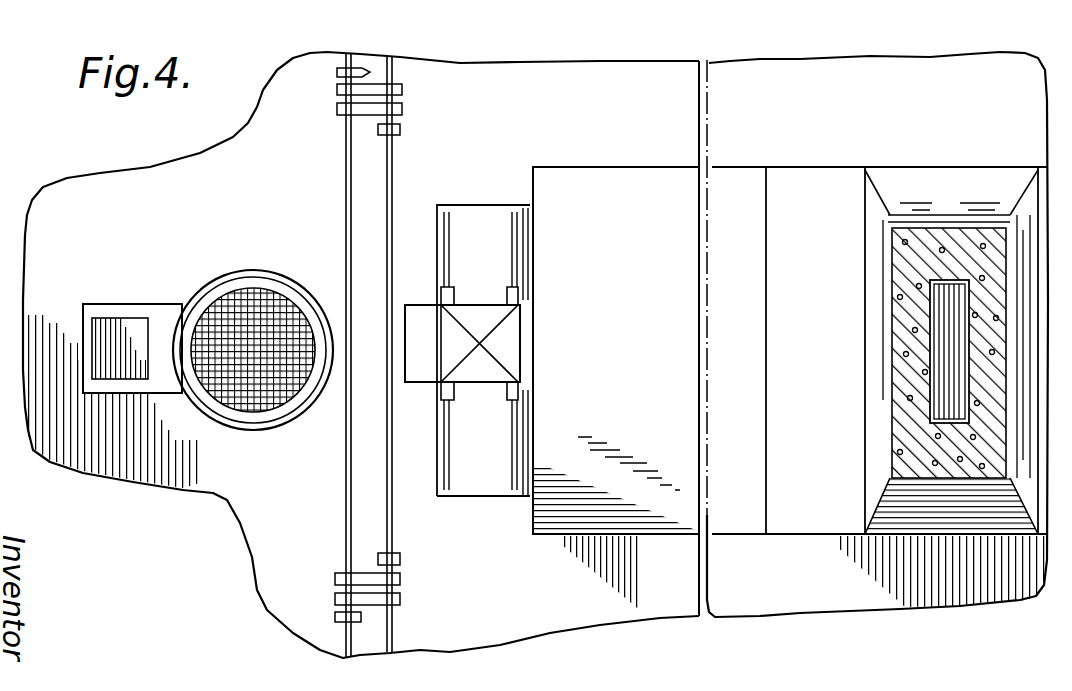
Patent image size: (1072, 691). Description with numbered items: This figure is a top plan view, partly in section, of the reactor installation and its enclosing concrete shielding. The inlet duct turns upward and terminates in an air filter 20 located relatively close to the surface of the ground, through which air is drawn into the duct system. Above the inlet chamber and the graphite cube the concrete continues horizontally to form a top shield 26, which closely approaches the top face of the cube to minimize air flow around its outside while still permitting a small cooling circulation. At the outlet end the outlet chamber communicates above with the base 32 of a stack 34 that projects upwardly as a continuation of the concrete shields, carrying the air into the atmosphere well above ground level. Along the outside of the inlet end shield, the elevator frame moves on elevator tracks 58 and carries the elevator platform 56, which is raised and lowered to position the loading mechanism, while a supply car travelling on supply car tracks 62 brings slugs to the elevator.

The air filter 20 is at (247, 283).
The supply car tracks 62 is at (346, 477).
The elevator tracks 58 is at (447, 450).
The elevator platform 56 is at (487, 482).
The top shield 26 is at (678, 520).
The base of stack 32 is at (907, 398).
The stack 34 is at (940, 346).